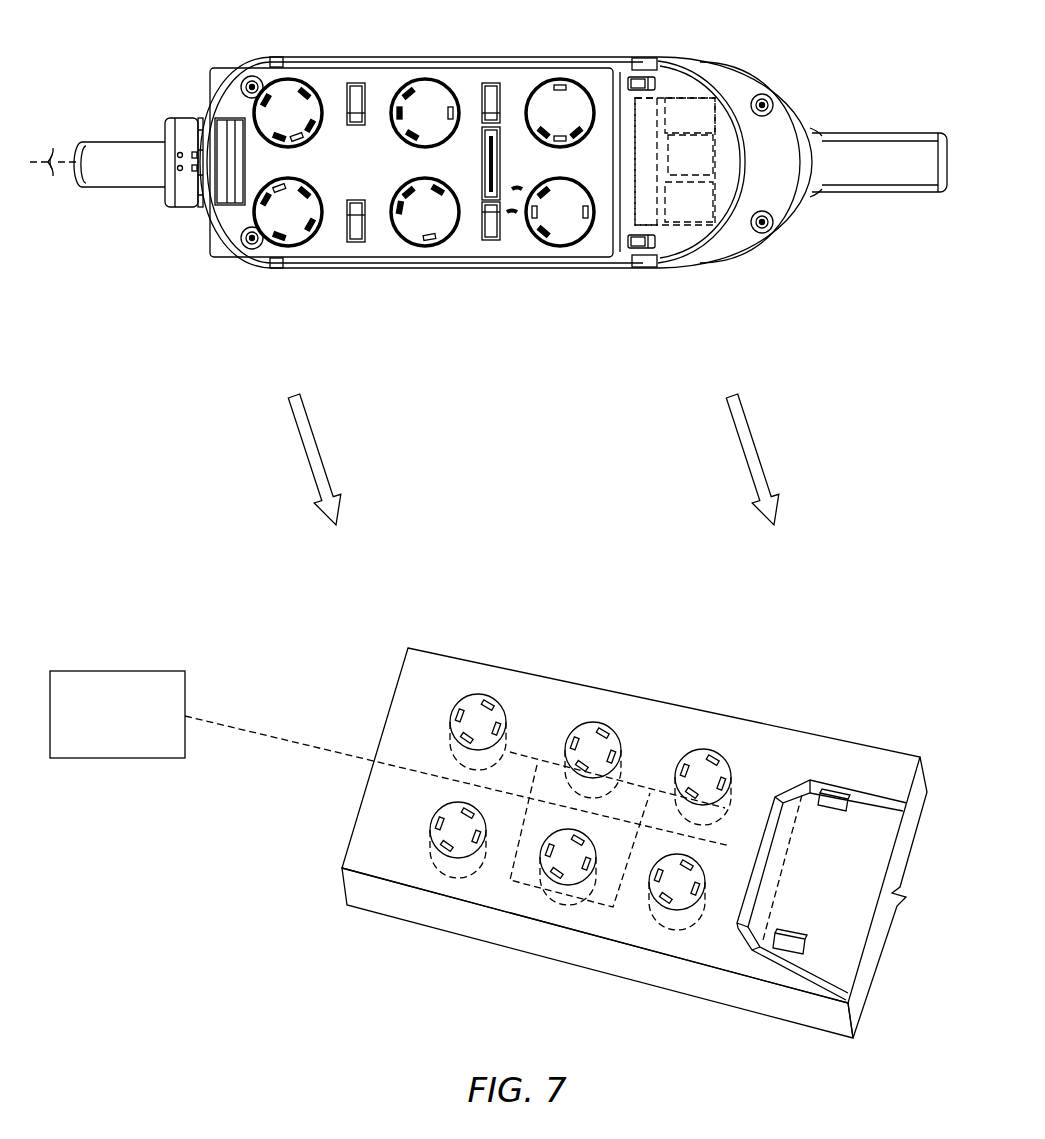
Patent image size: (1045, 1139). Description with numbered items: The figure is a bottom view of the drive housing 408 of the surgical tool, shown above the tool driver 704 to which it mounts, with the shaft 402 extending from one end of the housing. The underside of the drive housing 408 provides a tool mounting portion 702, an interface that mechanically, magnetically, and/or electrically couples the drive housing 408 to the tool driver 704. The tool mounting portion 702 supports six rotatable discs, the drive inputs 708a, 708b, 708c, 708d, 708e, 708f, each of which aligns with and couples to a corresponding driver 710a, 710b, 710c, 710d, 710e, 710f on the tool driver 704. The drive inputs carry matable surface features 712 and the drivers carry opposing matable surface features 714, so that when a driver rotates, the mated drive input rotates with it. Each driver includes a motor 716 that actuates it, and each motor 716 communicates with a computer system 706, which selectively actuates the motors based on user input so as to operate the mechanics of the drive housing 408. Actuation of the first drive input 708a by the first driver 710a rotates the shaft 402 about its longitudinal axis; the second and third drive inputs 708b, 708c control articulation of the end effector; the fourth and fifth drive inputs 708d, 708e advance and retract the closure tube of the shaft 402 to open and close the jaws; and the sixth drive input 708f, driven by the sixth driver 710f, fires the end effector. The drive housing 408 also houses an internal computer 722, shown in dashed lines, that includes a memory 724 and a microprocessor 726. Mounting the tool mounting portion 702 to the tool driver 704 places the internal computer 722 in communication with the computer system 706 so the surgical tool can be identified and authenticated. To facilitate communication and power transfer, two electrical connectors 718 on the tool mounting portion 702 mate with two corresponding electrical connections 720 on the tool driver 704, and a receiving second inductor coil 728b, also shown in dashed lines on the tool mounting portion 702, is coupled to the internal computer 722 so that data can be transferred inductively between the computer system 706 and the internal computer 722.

The drive housing 408 is at (174, 56).
The shaft 402 is at (123, 136).
The tool mounting portion 702 is at (406, 282).
The first drive input 708a is at (567, 92).
The second drive input 708b is at (428, 92).
The third drive input 708c is at (420, 232).
The fourth drive input 708d is at (293, 92).
The fifth drive input 708e is at (293, 233).
The sixth drive input 708f is at (562, 232).
The matable surface features 712 is at (316, 180).
The electrical connectors 718 is at (647, 74).
The internal computer 722 is at (676, 126).
The memory 724 is at (676, 164).
The microprocessor 726 is at (676, 209).
The second inductor coil 728b is at (657, 98).
The tool driver 704 is at (898, 749).
The computer system 706 is at (101, 755).
The first driver 710a is at (688, 898).
The second driver 710b is at (570, 870).
The third driver 710c is at (602, 735).
The fourth driver 710d is at (438, 840).
The fifth driver 710e is at (475, 710).
The sixth driver 710f is at (715, 762).
The matable surface features 714 is at (570, 730).
The motor 716 is at (450, 743).
The electrical connections 720 is at (795, 935).